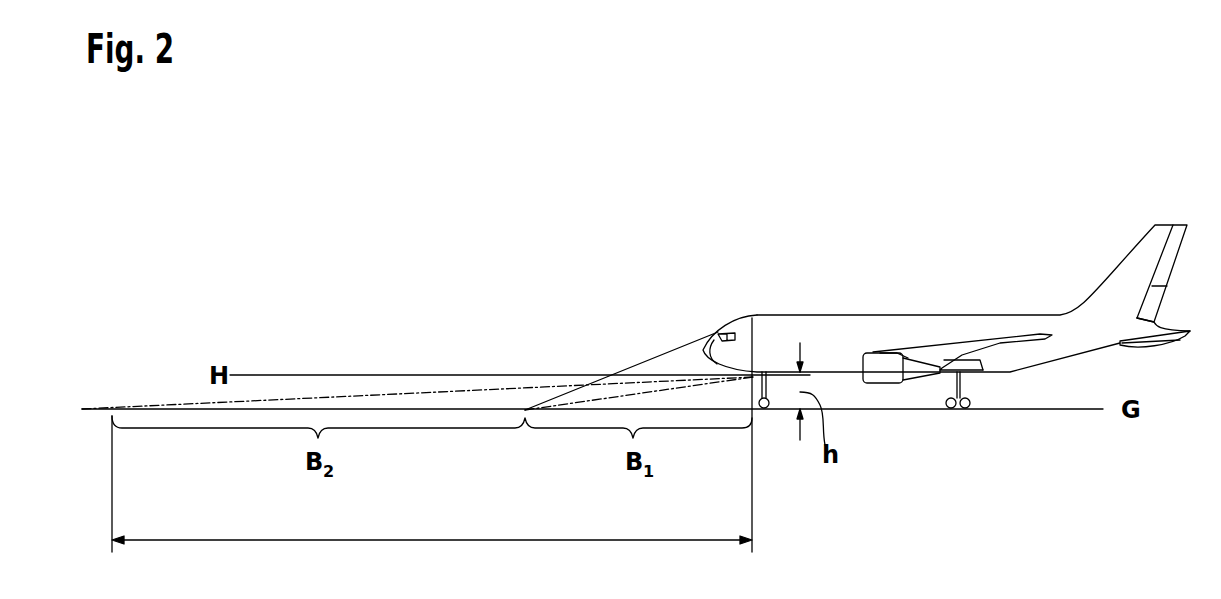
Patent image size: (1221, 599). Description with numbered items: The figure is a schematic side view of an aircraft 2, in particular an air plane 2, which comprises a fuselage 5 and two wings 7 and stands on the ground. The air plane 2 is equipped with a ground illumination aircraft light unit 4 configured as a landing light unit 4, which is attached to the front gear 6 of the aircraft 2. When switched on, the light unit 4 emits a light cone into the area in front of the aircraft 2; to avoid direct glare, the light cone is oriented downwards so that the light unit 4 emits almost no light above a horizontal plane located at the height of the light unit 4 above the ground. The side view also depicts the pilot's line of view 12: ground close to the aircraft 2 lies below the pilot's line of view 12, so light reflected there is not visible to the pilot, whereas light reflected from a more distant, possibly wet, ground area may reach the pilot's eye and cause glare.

The aircraft 2 is at (961, 271).
The ground illumination aircraft light unit 4 is at (760, 372).
The fuselage 5 is at (856, 333).
The front gear 6 is at (770, 412).
The wings 7 is at (990, 347).
The pilot's line of view 12 is at (660, 348).